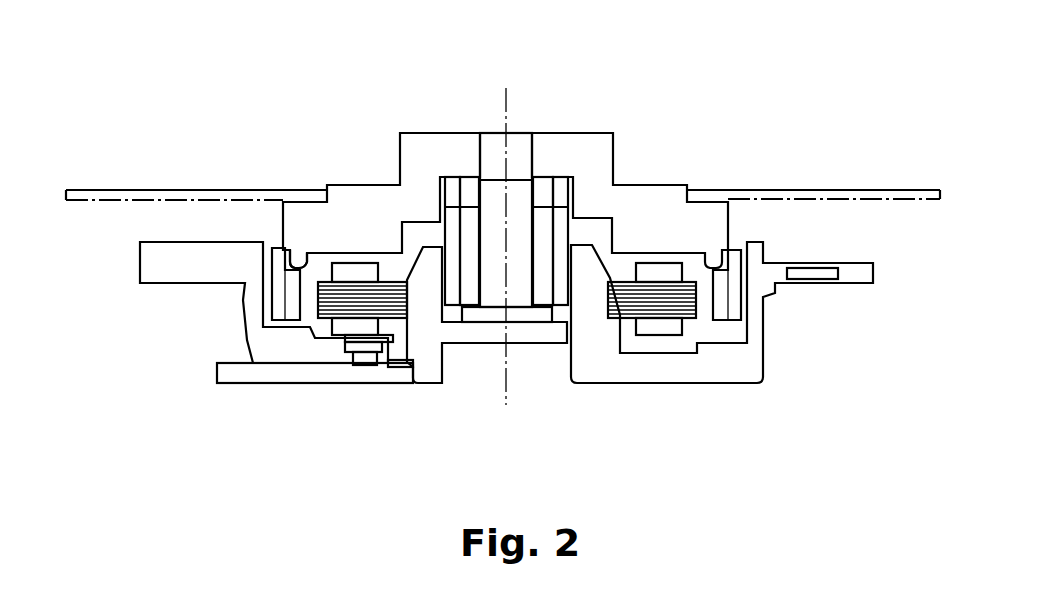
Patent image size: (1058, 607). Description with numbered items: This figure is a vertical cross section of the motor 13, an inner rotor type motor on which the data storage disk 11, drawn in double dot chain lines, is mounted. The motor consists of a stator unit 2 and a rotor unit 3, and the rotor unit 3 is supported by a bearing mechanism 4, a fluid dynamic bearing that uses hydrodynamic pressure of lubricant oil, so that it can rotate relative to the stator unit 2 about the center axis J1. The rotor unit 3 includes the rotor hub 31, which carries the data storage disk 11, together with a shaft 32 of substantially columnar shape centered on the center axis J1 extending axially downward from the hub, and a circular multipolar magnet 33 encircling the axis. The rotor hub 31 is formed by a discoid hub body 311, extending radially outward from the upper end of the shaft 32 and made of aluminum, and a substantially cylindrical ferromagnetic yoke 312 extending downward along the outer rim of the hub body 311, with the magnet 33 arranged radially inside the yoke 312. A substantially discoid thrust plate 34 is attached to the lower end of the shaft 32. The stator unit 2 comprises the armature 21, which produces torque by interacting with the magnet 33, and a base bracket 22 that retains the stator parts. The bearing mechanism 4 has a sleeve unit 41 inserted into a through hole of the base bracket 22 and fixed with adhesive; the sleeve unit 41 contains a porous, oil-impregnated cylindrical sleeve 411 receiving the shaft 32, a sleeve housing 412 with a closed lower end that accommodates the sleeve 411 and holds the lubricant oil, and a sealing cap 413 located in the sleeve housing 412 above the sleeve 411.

The motor 13 is at (361, 28).
The data storage disk 11 is at (796, 196).
The center axis J1 is at (512, 111).
The rotor unit 3 is at (262, 58).
The rotor hub 31 is at (330, 105).
The hub body 311 is at (387, 135).
The yoke 312 is at (284, 254).
The shaft 32 is at (497, 147).
The magnet 33 is at (283, 317).
The thrust plate 34 is at (489, 318).
The bearing mechanism 4 is at (693, 40).
The sleeve unit 41 is at (642, 85).
The sleeve 411 is at (577, 256).
The sleeve housing 412 is at (556, 245).
The sealing cap 413 is at (544, 175).
The stator unit 2 is at (662, 449).
The armature 21 is at (660, 318).
The base bracket 22 is at (620, 368).